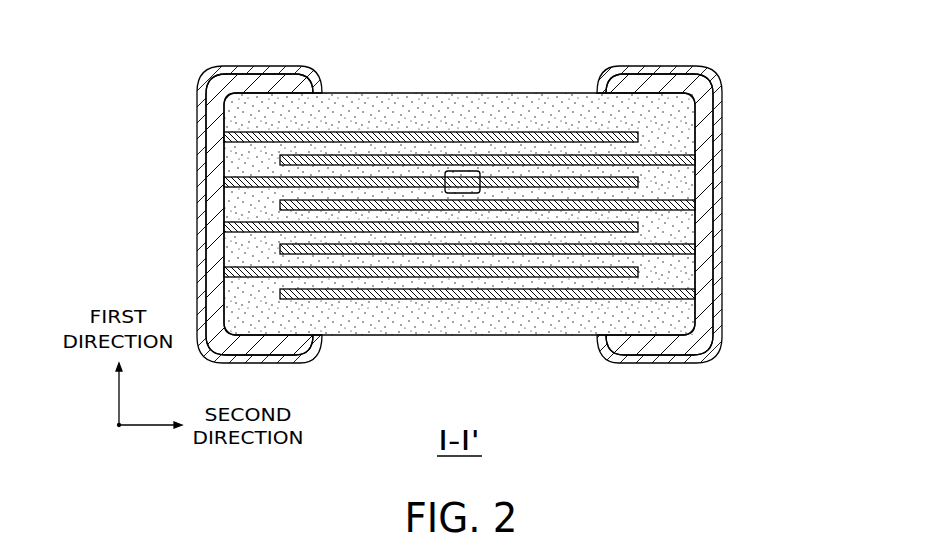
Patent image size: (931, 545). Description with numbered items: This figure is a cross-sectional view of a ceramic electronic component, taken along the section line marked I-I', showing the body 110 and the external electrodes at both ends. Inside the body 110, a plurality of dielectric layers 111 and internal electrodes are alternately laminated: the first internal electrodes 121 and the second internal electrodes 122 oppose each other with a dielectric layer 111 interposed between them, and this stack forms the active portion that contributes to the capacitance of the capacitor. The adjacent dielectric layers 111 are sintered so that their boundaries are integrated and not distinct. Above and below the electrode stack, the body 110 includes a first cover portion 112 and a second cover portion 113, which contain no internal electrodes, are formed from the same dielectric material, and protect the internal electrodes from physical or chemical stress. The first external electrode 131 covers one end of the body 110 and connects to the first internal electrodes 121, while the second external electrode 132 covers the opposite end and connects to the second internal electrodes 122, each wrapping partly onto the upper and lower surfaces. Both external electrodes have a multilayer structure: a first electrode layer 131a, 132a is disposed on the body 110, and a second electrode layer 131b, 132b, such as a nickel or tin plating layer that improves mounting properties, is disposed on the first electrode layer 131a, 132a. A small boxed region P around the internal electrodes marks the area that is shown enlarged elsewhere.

The body 110 is at (393, 93).
The dielectric layer 111 is at (339, 170).
The first cover portion 112 is at (459, 152).
The second cover portion 113 is at (375, 318).
The first internal electrode 121 is at (528, 132).
The second internal electrode 122 is at (587, 156).
The first external electrode 131 is at (184, 214).
The first electrode layer 131a is at (218, 143).
The second electrode layer 131b is at (220, 170).
The second external electrode 132 is at (737, 214).
The first electrode layer 132a is at (700, 187).
The second electrode layer 132b is at (703, 213).
The region P is at (463, 193).